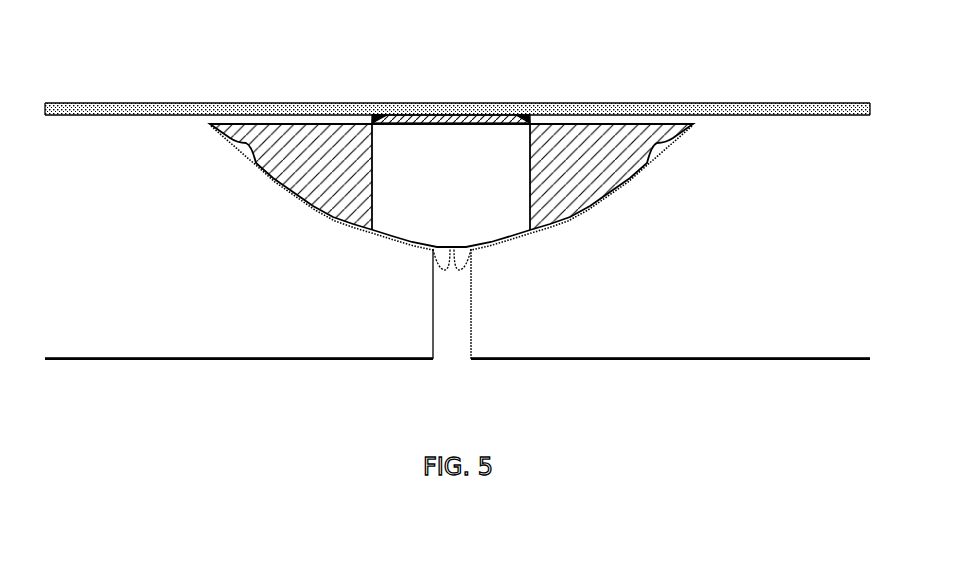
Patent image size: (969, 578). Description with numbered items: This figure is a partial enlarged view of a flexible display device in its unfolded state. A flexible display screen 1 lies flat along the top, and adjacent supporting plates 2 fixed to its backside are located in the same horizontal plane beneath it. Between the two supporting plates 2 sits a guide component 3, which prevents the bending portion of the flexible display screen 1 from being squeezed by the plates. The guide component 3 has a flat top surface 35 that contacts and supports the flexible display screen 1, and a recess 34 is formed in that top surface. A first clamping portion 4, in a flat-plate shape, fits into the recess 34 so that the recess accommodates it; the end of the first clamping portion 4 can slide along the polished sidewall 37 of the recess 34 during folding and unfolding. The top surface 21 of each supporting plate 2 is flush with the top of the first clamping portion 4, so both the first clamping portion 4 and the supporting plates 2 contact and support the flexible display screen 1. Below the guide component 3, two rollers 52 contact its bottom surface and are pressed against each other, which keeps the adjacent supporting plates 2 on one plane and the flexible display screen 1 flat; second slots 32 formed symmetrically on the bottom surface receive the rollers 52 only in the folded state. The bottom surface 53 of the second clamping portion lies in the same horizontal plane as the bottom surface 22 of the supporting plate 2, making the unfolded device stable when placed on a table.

The flexible display screen 1 is at (568, 109).
The top surface of supporting plate 21 is at (113, 115).
The supporting plate 2 is at (167, 327).
The bottom surface of supporting plate 22 is at (105, 359).
The guide component 3 is at (451, 141).
The second slot 32 is at (237, 145).
The recess 34 is at (298, 122).
The top surface of guide component 35 is at (447, 115).
The sidewall of recess 37 is at (376, 122).
The first clamping portion 4 is at (255, 121).
The roller 52 is at (436, 261).
The bottom surface of second clamping portion 53 is at (364, 359).